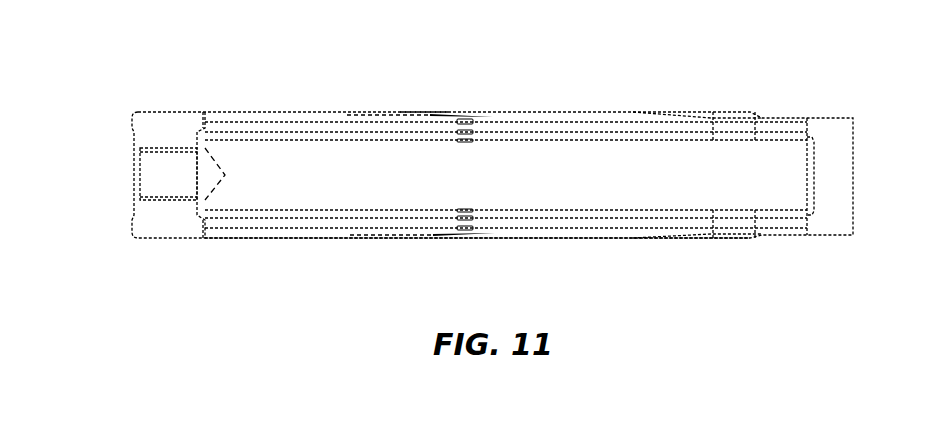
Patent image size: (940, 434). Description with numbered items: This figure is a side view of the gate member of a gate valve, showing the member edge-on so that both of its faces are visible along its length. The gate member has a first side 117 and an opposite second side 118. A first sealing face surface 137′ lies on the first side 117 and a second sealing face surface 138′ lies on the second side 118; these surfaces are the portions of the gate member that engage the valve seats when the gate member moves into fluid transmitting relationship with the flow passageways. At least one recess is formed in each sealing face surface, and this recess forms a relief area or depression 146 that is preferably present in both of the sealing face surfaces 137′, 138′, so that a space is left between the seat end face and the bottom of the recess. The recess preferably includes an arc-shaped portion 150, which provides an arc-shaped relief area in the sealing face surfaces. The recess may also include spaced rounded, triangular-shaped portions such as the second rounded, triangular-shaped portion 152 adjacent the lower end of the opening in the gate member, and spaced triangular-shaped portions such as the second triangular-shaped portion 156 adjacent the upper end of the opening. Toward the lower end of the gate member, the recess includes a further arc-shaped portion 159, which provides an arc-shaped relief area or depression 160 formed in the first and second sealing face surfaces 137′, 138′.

The first side 117 is at (286, 112).
The second side 118 is at (585, 241).
The first sealing face surface 137′ is at (318, 106).
The second sealing face surface 138′ is at (253, 245).
The relief area or depression 146 is at (380, 110).
The arc-shaped portion 150 is at (425, 108).
The second rounded, triangular-shaped portion 152 is at (482, 108).
The second triangular-shaped portion 156 is at (684, 111).
The arc-shaped portion 159 is at (202, 109).
The arc-shaped relief area or depression 160 is at (178, 111).